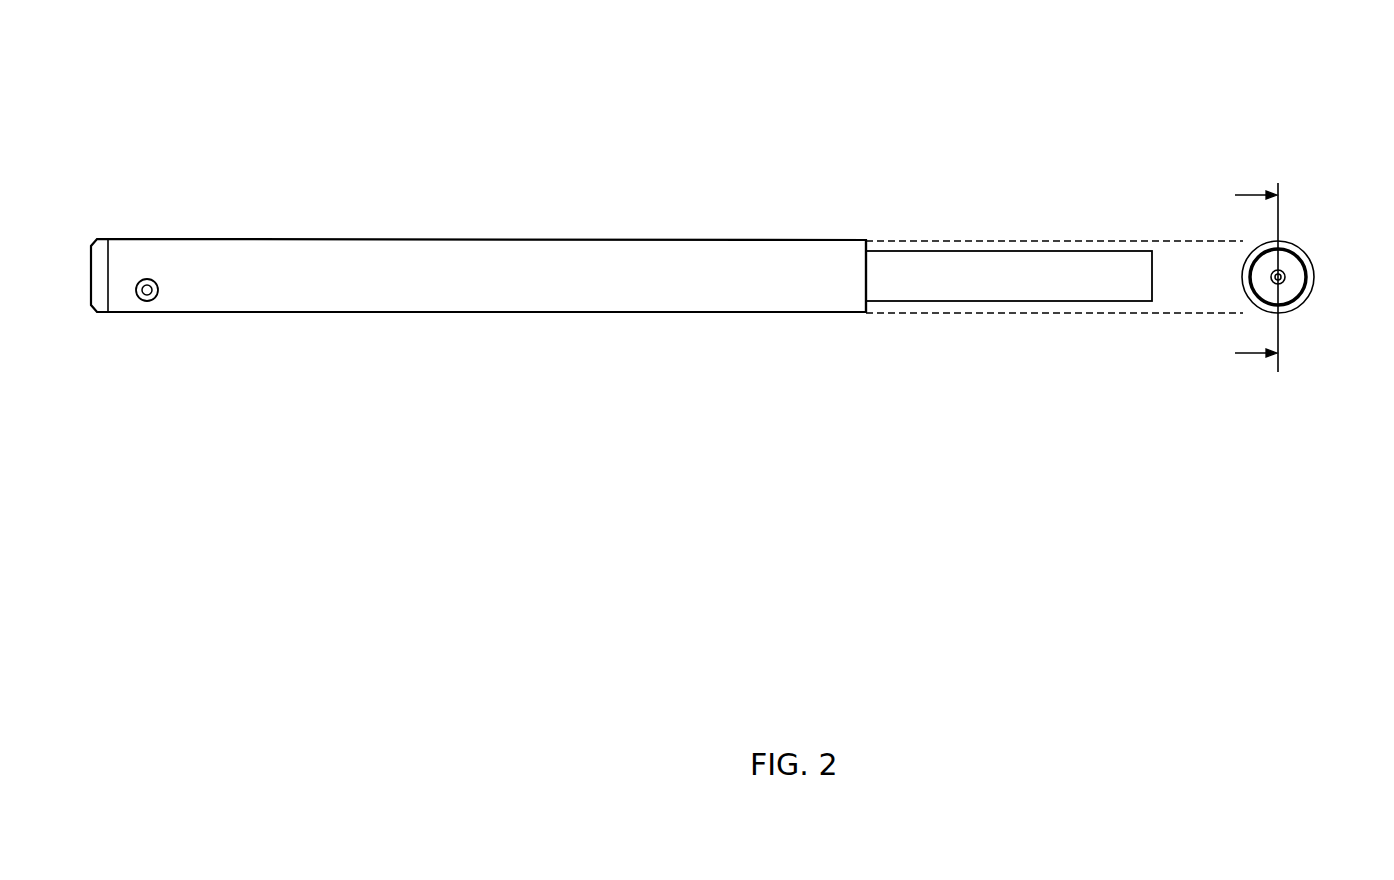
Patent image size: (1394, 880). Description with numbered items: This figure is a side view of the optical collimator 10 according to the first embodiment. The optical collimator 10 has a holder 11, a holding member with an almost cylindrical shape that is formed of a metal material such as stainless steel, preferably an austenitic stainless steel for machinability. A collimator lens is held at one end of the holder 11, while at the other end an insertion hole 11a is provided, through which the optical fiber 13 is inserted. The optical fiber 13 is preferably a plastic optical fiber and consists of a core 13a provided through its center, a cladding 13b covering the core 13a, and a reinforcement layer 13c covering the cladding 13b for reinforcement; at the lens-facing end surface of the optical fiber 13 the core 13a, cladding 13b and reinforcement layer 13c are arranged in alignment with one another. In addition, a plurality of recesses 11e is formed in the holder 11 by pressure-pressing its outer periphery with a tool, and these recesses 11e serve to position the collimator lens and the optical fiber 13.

The optical collimator 10 is at (237, 46).
The holder 11 is at (547, 240).
The insertion hole 11a is at (868, 244).
The recesses 11e is at (153, 288).
The optical fiber 13 is at (1017, 251).
The core 13a is at (1284, 280).
The cladding 13b is at (1294, 302).
The reinforcement layer 13c is at (1301, 260).